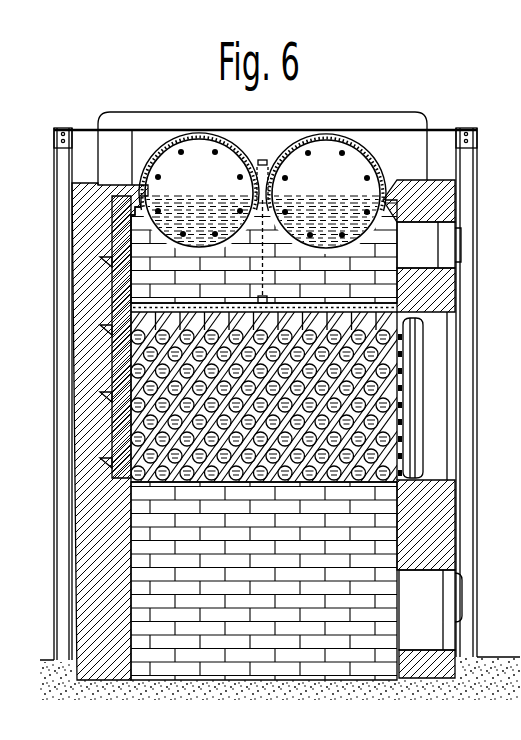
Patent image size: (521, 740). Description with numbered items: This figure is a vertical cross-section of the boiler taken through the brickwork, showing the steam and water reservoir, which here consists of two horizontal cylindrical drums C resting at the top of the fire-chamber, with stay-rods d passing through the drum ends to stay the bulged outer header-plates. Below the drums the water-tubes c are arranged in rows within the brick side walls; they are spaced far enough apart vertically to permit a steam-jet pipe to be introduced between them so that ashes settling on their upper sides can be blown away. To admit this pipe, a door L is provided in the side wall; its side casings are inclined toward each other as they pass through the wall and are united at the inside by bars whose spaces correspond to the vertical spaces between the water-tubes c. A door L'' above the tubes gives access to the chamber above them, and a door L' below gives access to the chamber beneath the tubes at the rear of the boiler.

The cylindrical drum C is at (262, 218).
The stay-rod d is at (181, 157).
The door above the water-tubes L'' is at (429, 245).
The door L is at (422, 396).
The door below the water-tubes L' is at (430, 610).
The water-tube c is at (421, 378).